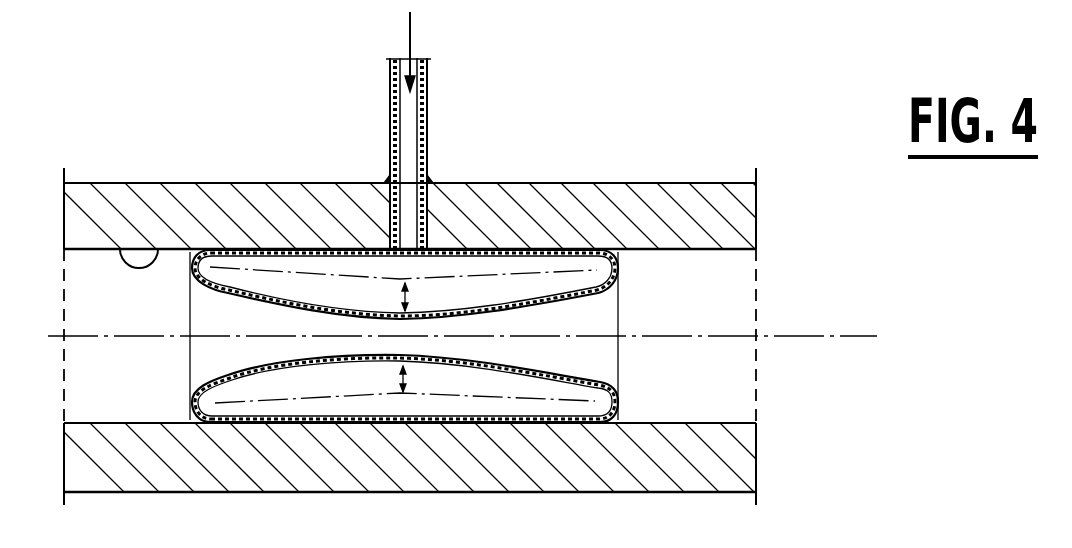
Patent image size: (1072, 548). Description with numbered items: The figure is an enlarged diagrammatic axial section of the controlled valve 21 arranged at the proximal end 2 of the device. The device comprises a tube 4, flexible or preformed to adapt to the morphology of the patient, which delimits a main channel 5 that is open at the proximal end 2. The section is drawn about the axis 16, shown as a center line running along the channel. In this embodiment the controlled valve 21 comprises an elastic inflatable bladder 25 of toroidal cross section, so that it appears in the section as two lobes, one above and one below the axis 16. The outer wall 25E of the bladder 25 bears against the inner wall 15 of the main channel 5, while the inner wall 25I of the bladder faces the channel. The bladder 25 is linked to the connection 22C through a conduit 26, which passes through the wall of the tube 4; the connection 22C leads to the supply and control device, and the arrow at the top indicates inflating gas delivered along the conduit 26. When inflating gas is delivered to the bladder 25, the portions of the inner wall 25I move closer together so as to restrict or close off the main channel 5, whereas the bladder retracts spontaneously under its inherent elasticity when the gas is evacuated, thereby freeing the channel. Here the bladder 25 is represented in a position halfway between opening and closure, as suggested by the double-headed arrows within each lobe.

The proximal end 2 is at (1066, 510).
The tube 4 is at (647, 197).
The main channel 5 is at (107, 405).
The inner wall 15 is at (124, 252).
The axis 16 is at (805, 335).
The controlled valve 21 is at (312, 242).
The connection 22C is at (412, 40).
The elastic inflatable bladder 25 is at (402, 403).
The outer wall 25E is at (315, 424).
The inner wall 25I is at (528, 312).
The conduit 26 is at (427, 133).